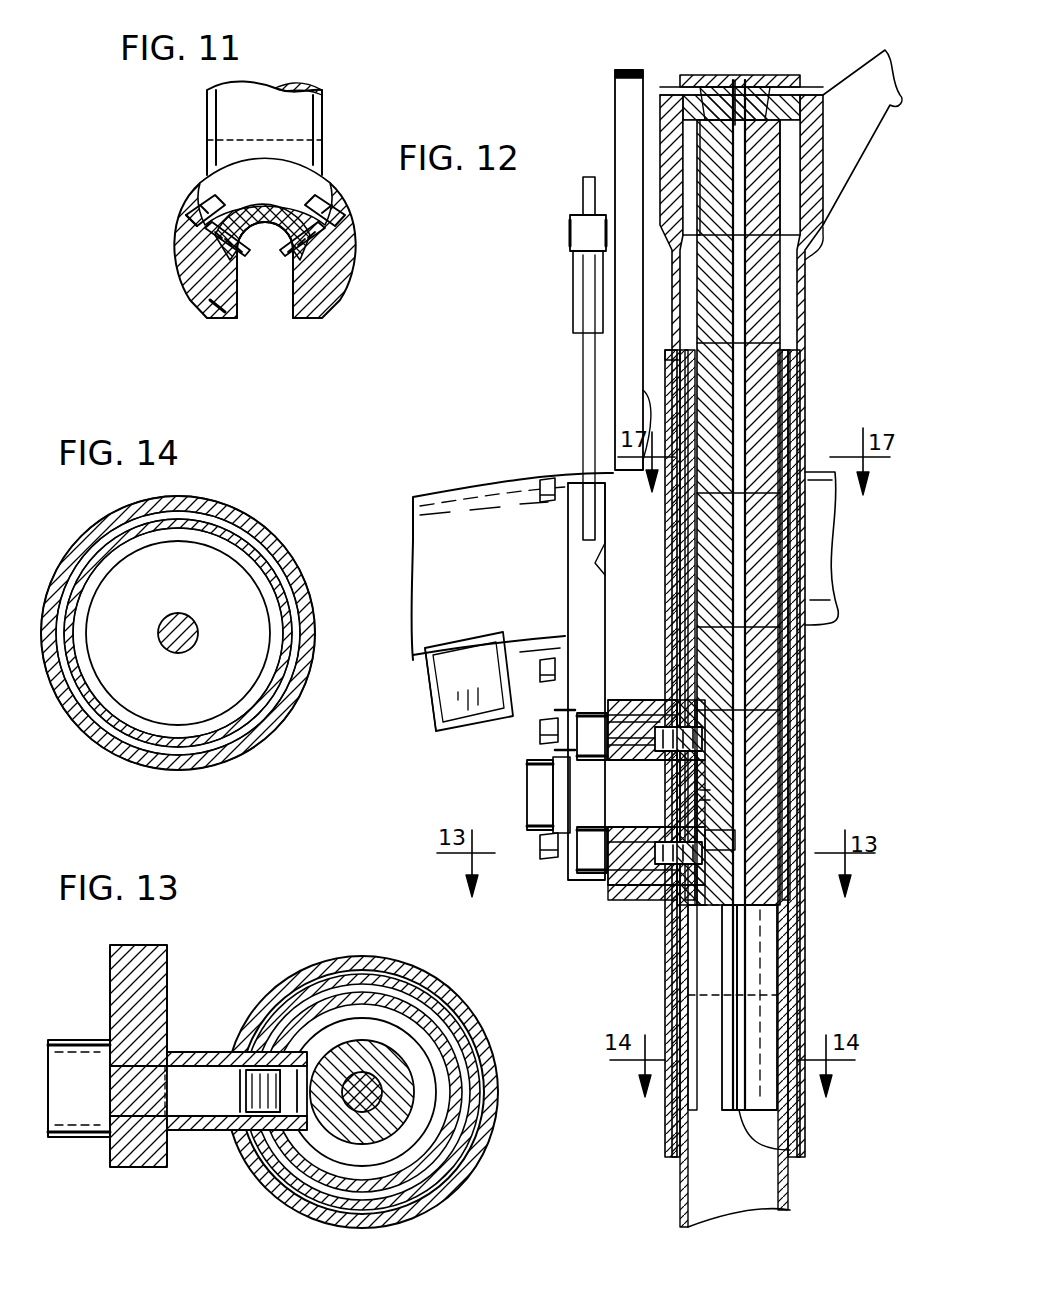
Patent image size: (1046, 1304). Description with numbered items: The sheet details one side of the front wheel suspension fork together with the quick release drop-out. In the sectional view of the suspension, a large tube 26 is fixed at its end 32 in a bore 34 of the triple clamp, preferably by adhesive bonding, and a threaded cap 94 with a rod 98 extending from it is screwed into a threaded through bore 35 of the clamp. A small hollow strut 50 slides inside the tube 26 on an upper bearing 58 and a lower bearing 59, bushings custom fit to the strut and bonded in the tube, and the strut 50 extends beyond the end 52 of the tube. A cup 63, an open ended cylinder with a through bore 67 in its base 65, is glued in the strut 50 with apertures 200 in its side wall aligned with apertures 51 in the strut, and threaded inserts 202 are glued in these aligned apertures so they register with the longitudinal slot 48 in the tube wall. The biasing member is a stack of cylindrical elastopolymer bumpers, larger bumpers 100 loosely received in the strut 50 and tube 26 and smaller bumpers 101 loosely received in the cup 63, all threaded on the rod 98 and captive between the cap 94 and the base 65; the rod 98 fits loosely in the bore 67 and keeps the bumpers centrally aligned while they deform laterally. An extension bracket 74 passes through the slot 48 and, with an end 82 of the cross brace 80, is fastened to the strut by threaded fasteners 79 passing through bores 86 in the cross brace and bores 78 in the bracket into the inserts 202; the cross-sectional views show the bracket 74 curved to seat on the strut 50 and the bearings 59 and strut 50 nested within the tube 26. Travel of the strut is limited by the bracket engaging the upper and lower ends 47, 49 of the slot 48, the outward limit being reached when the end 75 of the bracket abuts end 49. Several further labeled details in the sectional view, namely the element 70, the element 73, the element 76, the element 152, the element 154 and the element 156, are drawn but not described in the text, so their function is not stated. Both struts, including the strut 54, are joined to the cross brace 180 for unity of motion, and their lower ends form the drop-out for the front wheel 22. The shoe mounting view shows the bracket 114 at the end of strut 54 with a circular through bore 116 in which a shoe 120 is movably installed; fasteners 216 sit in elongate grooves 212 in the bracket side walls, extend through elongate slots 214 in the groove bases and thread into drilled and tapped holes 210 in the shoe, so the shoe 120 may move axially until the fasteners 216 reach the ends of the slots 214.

In FIG. 11, the strut 54 is at (207, 118).
In FIG. 11, the end bracket of strut 114 is at (180, 265).
In FIG. 11, the through bore 116 is at (207, 310).
In FIG. 11, the shoe 120 is at (312, 285).
In FIG. 11, the drilled and tapped holes 210 is at (298, 272).
In FIG. 11, the elongate grooves 212 is at (190, 200).
In FIG. 11, the elongate slots 214 is at (208, 232).
In FIG. 11, the fasteners 216 is at (185, 200).
In FIG. 12, the front wheel 22 is at (462, 495).
In FIG. 14, the large tube 26 is at (278, 542).
In FIG. 13, the large tube 26 is at (470, 1000).
In FIG. 12, the large tube 26 is at (805, 272).
In FIG. 12, the end of tube 32 is at (686, 148).
In FIG. 12, the bore 34 is at (800, 190).
In FIG. 12, the threaded through bore 35 is at (765, 85).
In FIG. 12, the upper end of slot 47 is at (672, 595).
In FIG. 13, the longitudinal slot 48 is at (235, 1130).
In FIG. 12, the longitudinal slot 48 is at (668, 930).
In FIG. 12, the lower end of slot 49 is at (668, 975).
In FIG. 14, the strut 50 is at (260, 715).
In FIG. 13, the strut 50 is at (430, 1150).
In FIG. 12, the strut 50 is at (678, 1190).
In FIG. 12, the apertures 51 is at (553, 783).
In FIG. 12, the end of tube 52 is at (668, 1145).
In FIG. 12, the upper bearing 58 is at (805, 455).
In FIG. 14, the lower bearing 59 is at (300, 620).
In FIG. 13, the lower bearing 59 is at (478, 1078).
In FIG. 12, the lower bearing 59 is at (790, 1005).
In FIG. 13, the cup 63 is at (365, 1000).
In FIG. 12, the cup 63 is at (705, 800).
In FIG. 12, the base of cup 65 is at (768, 915).
In FIG. 12, the through bore 67 is at (715, 915).
In FIG. 12, the port 70 is at (740, 860).
In FIG. 12, the upper valve 73 is at (572, 650).
In FIG. 13, the extension bracket 74 is at (192, 1052).
In FIG. 12, the extension bracket 74 is at (650, 797).
In FIG. 12, the end of bracket 75 is at (665, 890).
In FIG. 12, the upper fitting 76 is at (640, 740).
In FIG. 12, the bores in bracket 78 is at (620, 872).
In FIG. 13, the threaded fasteners 79 is at (53, 1138).
In FIG. 12, the threaded fasteners 79 is at (572, 708).
In FIG. 13, the cross brace 80 is at (140, 1165).
In FIG. 12, the end of cross brace 82 is at (635, 886).
In FIG. 12, the bores in cross brace 86 is at (577, 735).
In FIG. 12, the threaded cap 94 is at (740, 80).
In FIG. 14, the rod 98 is at (188, 650).
In FIG. 13, the rod 98 is at (380, 1112).
In FIG. 12, the rod 98 is at (790, 1138).
In FIG. 12, the bumpers 100 is at (770, 312).
In FIG. 13, the bumpers 101 is at (380, 1048).
In FIG. 12, the bumpers 101 is at (700, 690).
In FIG. 12, the window 152 is at (450, 660).
In FIG. 12, the window edge 154 is at (500, 720).
In FIG. 12, the sensor 156 is at (583, 190).
In FIG. 12, the cross brace 180 is at (622, 380).
In FIG. 12, the apertures 200 is at (735, 820).
In FIG. 13, the threaded inserts 202 is at (282, 1050).
In FIG. 12, the threaded inserts 202 is at (672, 722).